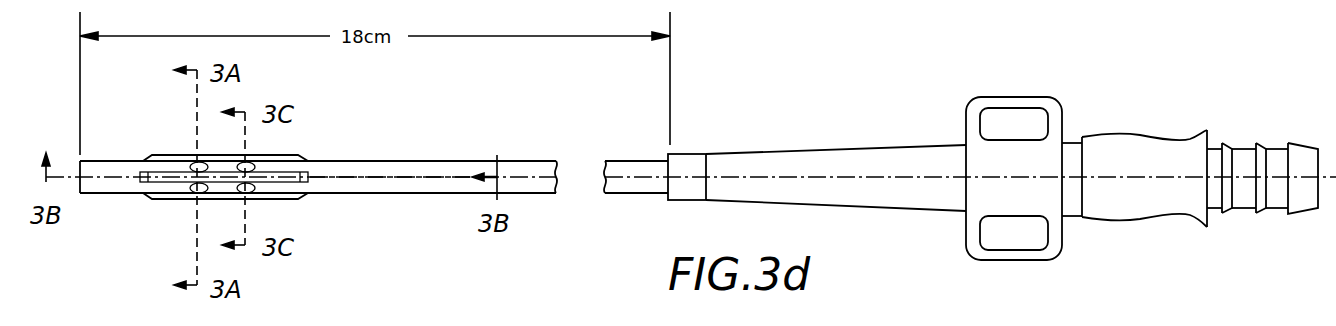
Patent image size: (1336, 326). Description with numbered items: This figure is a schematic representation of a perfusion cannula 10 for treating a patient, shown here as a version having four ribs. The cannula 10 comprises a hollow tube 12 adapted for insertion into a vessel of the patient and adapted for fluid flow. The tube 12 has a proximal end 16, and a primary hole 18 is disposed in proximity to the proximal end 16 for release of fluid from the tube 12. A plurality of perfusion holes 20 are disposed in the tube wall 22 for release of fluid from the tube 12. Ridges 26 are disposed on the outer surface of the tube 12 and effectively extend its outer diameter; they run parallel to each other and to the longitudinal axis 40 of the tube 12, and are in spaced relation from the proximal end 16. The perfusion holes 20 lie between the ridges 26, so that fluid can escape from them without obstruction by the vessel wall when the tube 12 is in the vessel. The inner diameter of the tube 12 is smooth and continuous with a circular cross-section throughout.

The perfusion cannula 10 is at (1178, 110).
The hollow tube 12 is at (430, 206).
The proximal end 16 is at (84, 212).
The primary hole 18 is at (68, 150).
The perfusion holes 20 is at (176, 214).
The tube wall 22 is at (405, 161).
The ridges 26 is at (326, 144).
The longitudinal axis 40 is at (392, 179).